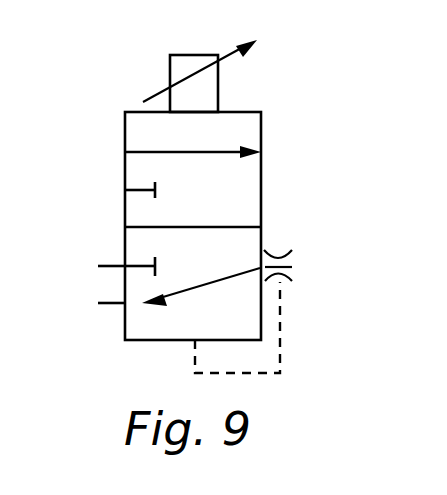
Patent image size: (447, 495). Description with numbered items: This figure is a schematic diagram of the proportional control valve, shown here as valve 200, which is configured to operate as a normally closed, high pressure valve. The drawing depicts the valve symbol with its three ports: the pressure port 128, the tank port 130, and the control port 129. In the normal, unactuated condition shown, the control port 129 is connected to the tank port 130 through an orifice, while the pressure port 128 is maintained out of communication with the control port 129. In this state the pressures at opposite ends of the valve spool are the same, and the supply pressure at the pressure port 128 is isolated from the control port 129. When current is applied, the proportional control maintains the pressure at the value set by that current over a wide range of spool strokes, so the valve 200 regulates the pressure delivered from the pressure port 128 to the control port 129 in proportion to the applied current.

The pilot operated directional control valve 200 is at (148, 386).
The pressure port 128 is at (108, 266).
The tank port 130 is at (112, 303).
The control port 129 is at (262, 252).